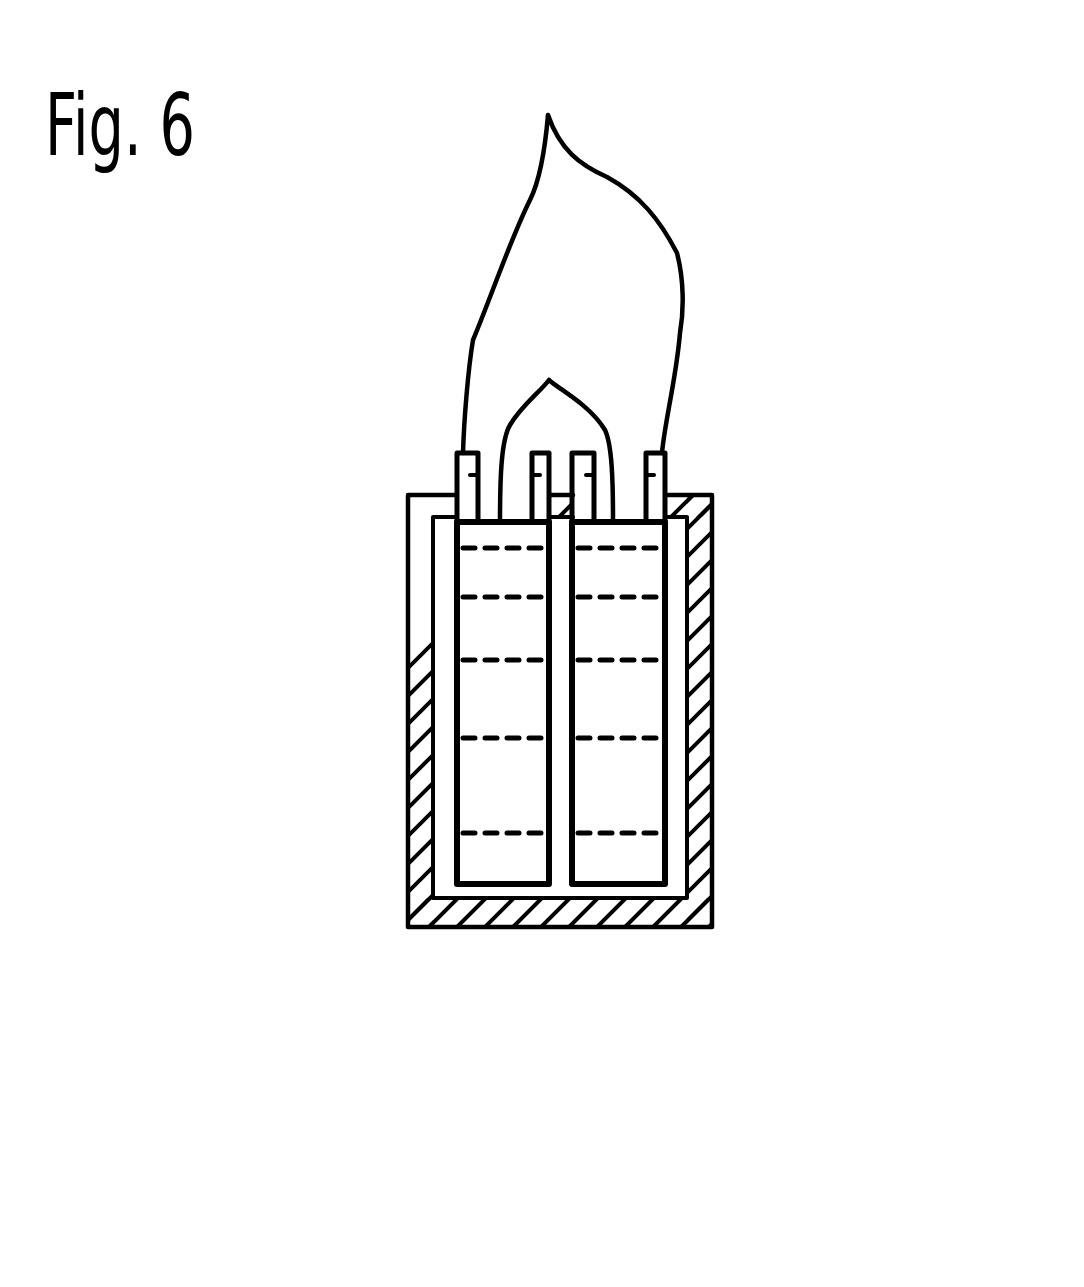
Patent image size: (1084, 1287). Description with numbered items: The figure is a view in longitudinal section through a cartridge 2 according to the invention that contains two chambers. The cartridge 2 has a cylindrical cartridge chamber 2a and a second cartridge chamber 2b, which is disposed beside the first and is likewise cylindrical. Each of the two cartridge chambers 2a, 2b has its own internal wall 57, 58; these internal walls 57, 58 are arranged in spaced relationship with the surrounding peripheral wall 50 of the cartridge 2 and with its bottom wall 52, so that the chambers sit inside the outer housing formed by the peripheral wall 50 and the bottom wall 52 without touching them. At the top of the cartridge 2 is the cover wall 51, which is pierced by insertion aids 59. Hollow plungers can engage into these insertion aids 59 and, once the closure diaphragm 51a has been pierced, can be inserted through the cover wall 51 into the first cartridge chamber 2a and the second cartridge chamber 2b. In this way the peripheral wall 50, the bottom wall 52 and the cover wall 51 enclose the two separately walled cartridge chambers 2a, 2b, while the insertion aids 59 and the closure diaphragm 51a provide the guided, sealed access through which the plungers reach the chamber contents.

The cartridge 2 is at (334, 430).
The cartridge chamber 2a is at (497, 693).
The cartridge chamber 2b is at (618, 788).
The peripheral wall 50 is at (700, 664).
The cover wall 51 is at (433, 494).
The closure diaphragm 51a is at (549, 380).
The bottom wall 52 is at (470, 907).
The internal wall 57 is at (455, 578).
The internal wall 58 is at (687, 613).
The insertion aids 59 is at (548, 115).